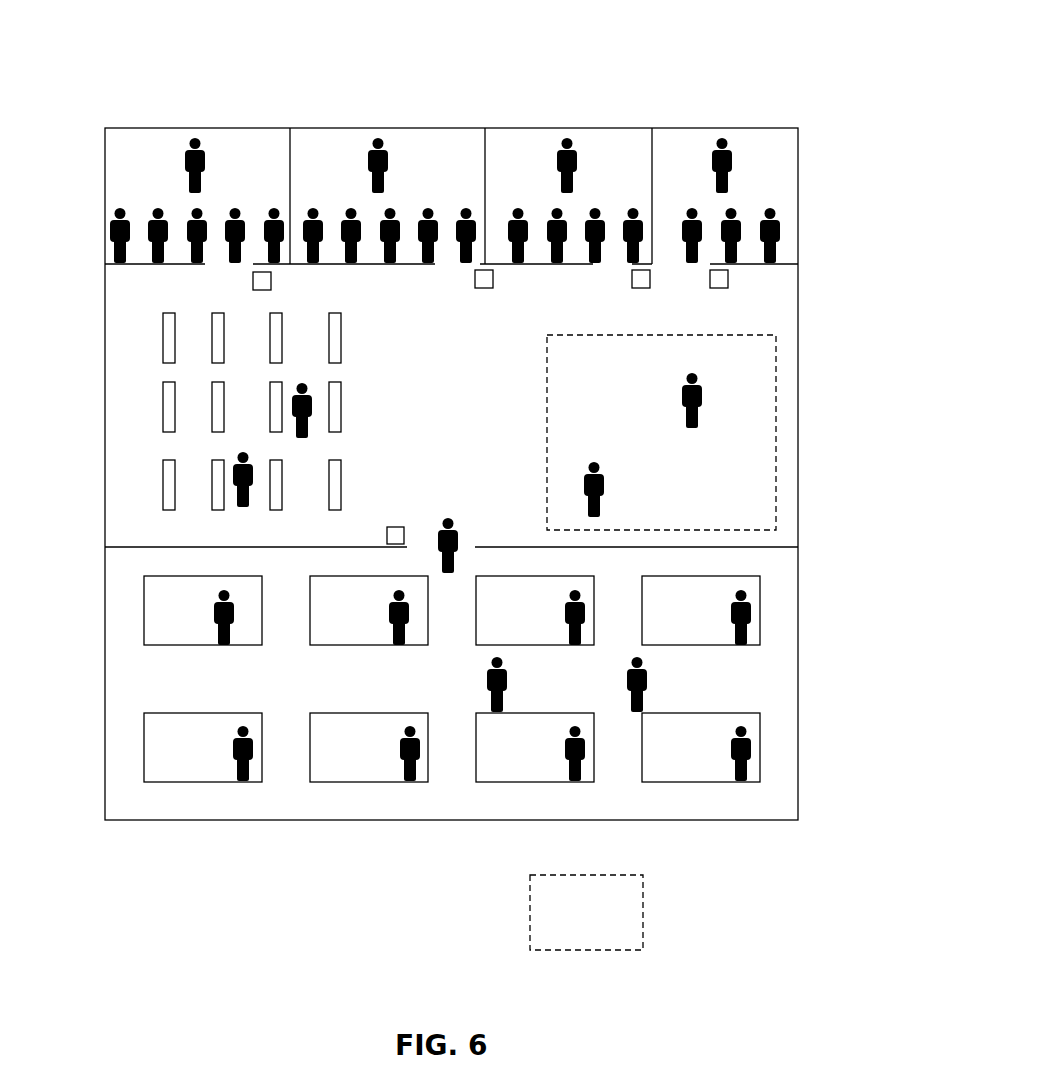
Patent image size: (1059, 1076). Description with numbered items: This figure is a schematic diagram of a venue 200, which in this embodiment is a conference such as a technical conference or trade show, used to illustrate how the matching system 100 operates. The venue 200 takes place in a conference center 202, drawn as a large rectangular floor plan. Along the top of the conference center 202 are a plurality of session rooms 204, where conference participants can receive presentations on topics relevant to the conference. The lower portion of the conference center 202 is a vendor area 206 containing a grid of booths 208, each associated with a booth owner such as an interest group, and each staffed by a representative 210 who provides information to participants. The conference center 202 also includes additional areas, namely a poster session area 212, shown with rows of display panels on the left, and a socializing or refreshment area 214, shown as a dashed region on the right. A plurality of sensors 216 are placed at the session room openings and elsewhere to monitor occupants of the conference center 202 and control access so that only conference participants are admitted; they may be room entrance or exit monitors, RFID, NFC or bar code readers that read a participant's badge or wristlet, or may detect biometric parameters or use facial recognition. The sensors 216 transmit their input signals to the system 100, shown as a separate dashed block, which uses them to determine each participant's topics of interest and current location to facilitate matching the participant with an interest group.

The matching system 100 is at (604, 924).
The venue 200 is at (598, 57).
The conference center 202 is at (183, 822).
The session rooms 204 is at (153, 156).
The vendor area 206 is at (512, 696).
The booths 208 is at (702, 756).
The representatives 210 is at (227, 646).
The poster session area 212 is at (132, 477).
The socializing or refreshment area 214 is at (778, 487).
The sensors 216 is at (271, 281).